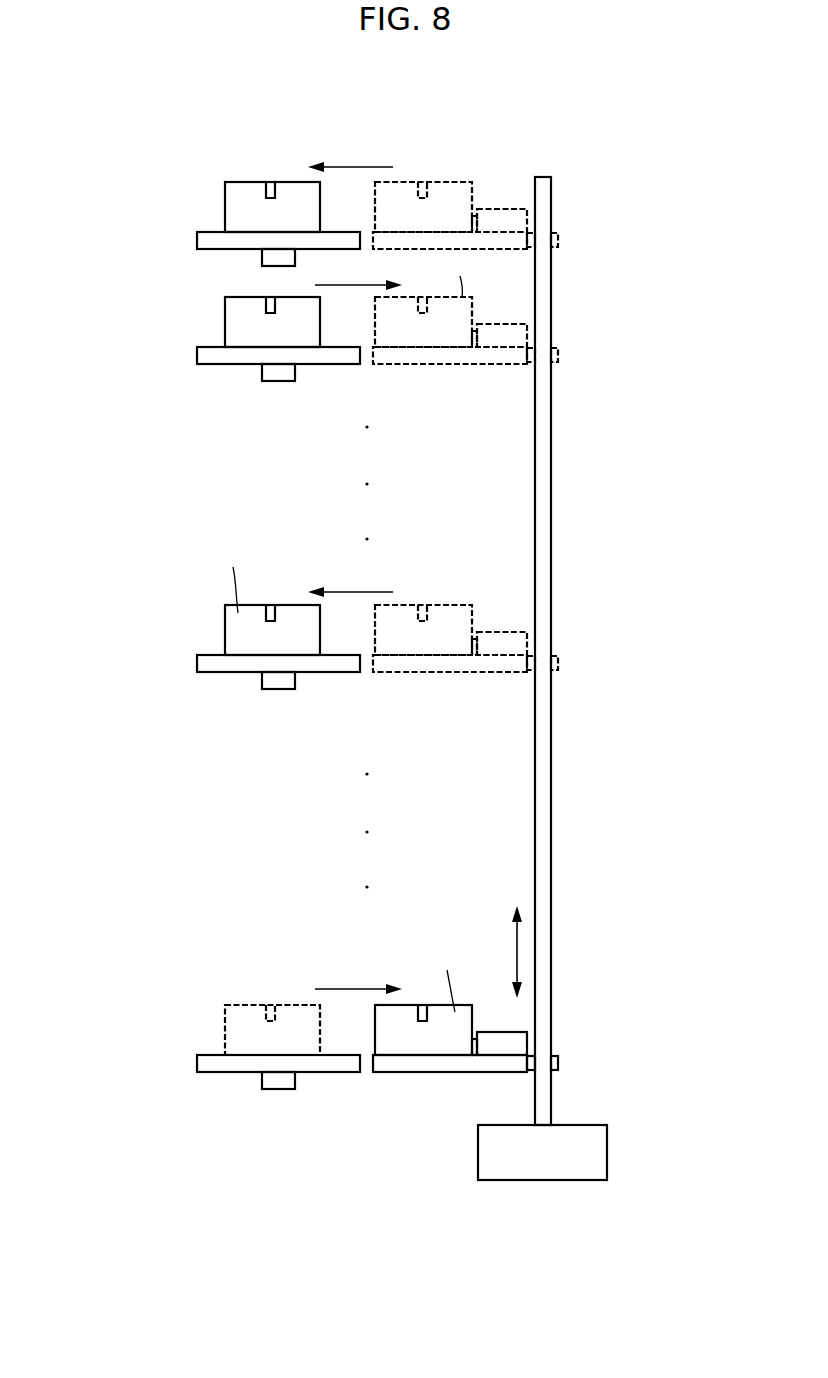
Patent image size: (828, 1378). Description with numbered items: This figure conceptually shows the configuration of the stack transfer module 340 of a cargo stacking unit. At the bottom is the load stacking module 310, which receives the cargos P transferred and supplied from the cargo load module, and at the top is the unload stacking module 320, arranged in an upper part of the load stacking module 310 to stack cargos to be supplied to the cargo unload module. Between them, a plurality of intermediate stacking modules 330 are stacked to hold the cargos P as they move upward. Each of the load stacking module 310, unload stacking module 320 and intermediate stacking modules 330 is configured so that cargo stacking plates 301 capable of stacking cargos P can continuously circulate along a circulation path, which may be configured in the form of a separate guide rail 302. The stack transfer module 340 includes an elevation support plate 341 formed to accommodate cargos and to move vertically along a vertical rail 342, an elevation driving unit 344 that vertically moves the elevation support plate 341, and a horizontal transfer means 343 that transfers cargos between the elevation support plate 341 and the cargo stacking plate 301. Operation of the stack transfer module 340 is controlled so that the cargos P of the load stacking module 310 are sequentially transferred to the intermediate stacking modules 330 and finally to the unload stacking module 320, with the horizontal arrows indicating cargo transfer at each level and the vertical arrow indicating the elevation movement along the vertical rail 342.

The load stacking module 310 is at (178, 1043).
The unload stacking module 320 is at (178, 217).
The intermediate stacking module 330 is at (164, 966).
The cargo stacking plate 301 is at (205, 1074).
The guide rail 302 is at (277, 1090).
The elevation support plate 341 is at (404, 1068).
The vertical rail 342 is at (545, 970).
The horizontal transfer means 343 is at (503, 1045).
The stack transfer module 340 is at (574, 1067).
The elevation driving unit 344 is at (603, 1153).
The cargo P is at (242, 180).